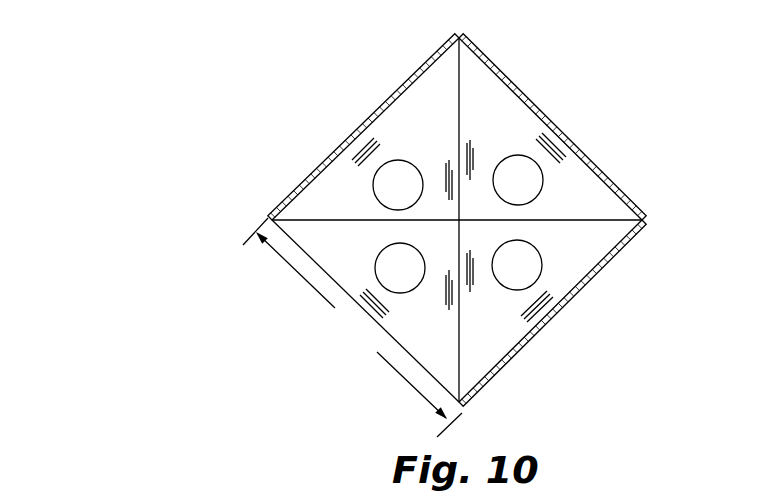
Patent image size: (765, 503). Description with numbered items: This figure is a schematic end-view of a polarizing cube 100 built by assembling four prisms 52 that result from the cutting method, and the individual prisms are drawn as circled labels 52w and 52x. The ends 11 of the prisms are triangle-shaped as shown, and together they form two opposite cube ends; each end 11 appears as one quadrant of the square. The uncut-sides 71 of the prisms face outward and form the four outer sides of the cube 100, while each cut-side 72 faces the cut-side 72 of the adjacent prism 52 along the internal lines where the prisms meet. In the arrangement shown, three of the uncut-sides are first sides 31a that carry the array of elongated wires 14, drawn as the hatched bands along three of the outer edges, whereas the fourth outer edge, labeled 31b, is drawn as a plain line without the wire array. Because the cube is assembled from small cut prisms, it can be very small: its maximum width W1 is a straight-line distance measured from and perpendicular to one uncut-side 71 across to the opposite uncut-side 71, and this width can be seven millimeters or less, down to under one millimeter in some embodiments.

The polarizing cube 100 is at (107, 238).
The array of elongated wires 14 is at (458, 35).
The first side 31a is at (578, 350).
The plain edge 31b is at (320, 267).
The ends 11 is at (452, 106).
The uncut-sides 71 is at (345, 142).
The cut-sides 72 is at (457, 118).
The prisms 52 is at (303, 232).
The wide connector 52w is at (458, 222).
The connector x 52x is at (400, 268).
The maximum width W1 is at (352, 327).